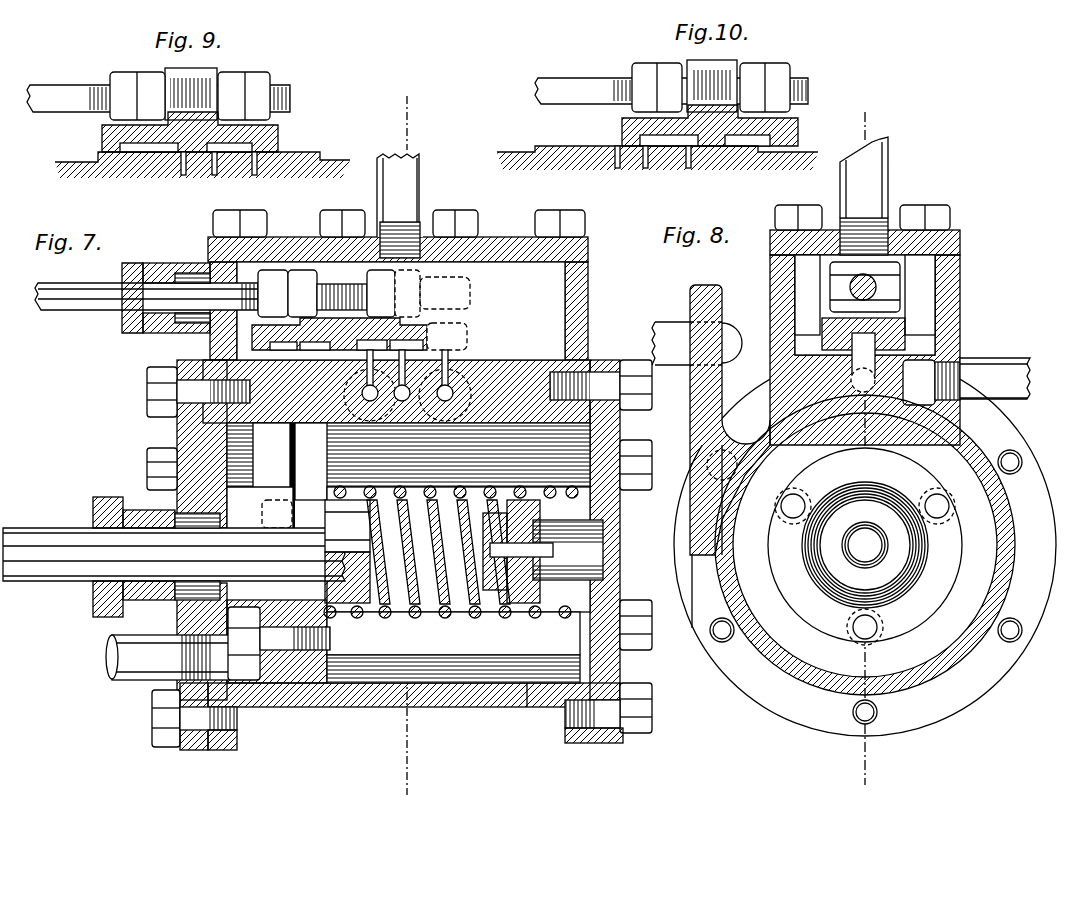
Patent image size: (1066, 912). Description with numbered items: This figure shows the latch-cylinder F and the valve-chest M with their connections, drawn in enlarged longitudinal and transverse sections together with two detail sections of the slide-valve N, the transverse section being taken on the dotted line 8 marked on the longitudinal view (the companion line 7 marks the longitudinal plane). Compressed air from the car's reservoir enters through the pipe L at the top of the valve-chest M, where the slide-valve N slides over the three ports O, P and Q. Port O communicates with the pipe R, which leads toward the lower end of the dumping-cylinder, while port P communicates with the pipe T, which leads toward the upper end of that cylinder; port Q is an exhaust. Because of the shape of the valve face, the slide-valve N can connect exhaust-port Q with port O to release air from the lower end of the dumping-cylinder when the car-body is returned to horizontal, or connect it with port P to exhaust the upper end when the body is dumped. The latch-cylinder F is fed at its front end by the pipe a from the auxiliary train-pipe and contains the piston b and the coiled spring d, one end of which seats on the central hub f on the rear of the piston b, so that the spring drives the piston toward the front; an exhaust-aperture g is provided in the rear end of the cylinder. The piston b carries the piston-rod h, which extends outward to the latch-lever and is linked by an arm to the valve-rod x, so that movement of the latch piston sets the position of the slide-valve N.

In FIG. 9, the valve-rod x is at (158, 93).
In FIG. 10, the valve-rod x is at (671, 83).
In FIG. 7, the valve-rod x is at (58, 312).
In FIG. 8, the valve-rod x is at (878, 285).
In FIG. 9, the slide-valve N is at (280, 135).
In FIG. 10, the slide-valve N is at (721, 125).
In FIG. 7, the slide-valve N is at (468, 332).
In FIG. 8, the slide-valve N is at (906, 324).
In FIG. 9, the valve-chest M is at (202, 155).
In FIG. 10, the valve-chest M is at (657, 151).
In FIG. 7, the valve-chest M is at (401, 311).
In FIG. 8, the valve-chest M is at (817, 380).
In FIG. 9, the port O is at (182, 177).
In FIG. 10, the port O is at (617, 170).
In FIG. 7, the port O is at (366, 377).
In FIG. 8, the port O is at (863, 362).
In FIG. 9, the exhaust-port Q is at (214, 177).
In FIG. 10, the exhaust-port Q is at (646, 170).
In FIG. 7, the exhaust-port Q is at (405, 378).
In FIG. 9, the port P is at (255, 177).
In FIG. 10, the port P is at (689, 170).
In FIG. 7, the port P is at (450, 372).
In FIG. 7, the pipe R is at (472, 394).
In FIG. 7, the pipe T is at (340, 390).
In FIG. 8, the pipe T is at (975, 362).
In FIG. 7, the pipe L is at (408, 206).
In FIG. 8, the pipe L is at (871, 196).
In FIG. 7, the latch-cylinder F is at (470, 700).
In FIG. 8, the latch-cylinder F is at (703, 665).
In FIG. 7, the exhaust-aperture g is at (528, 707).
In FIG. 7, the piston-rod h is at (172, 557).
In FIG. 8, the piston-rod h is at (865, 545).
In FIG. 7, the piston b is at (408, 553).
In FIG. 8, the piston b is at (865, 545).
In FIG. 7, the central hub f is at (347, 551).
In FIG. 8, the central hub f is at (865, 545).
In FIG. 7, the coiled spring d is at (498, 620).
In FIG. 8, the coiled spring d is at (878, 485).
In FIG. 7, the piston rod c is at (543, 551).
In FIG. 7, the pipe a is at (209, 643).
In FIG. 7, the section line 8 8 is at (404, 448).
In FIG. 8, the section line 7 is at (866, 458).